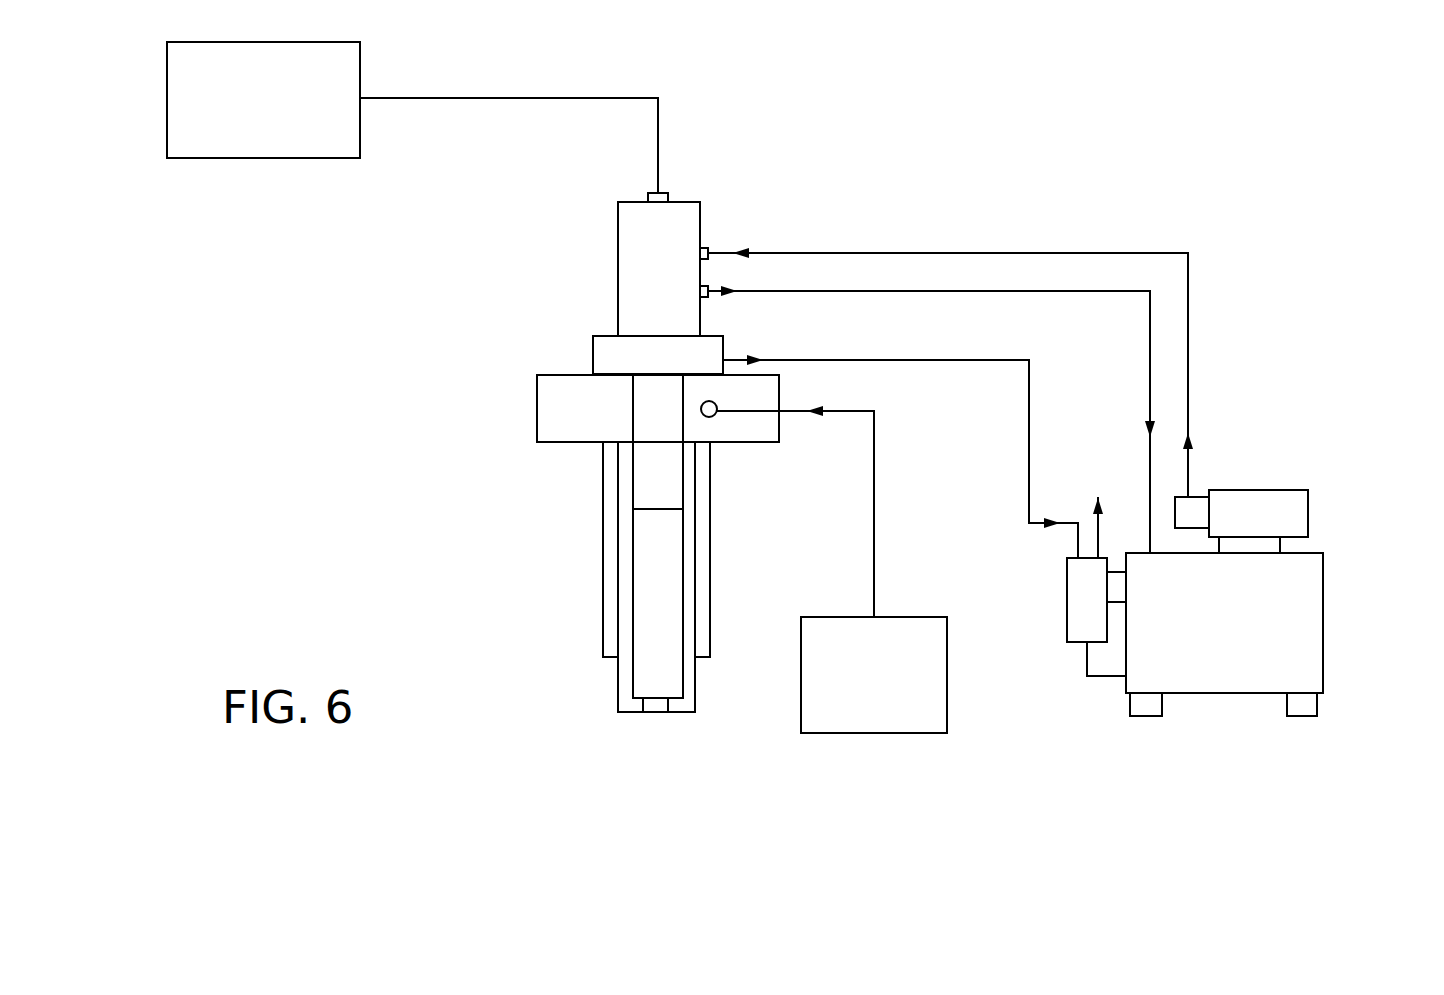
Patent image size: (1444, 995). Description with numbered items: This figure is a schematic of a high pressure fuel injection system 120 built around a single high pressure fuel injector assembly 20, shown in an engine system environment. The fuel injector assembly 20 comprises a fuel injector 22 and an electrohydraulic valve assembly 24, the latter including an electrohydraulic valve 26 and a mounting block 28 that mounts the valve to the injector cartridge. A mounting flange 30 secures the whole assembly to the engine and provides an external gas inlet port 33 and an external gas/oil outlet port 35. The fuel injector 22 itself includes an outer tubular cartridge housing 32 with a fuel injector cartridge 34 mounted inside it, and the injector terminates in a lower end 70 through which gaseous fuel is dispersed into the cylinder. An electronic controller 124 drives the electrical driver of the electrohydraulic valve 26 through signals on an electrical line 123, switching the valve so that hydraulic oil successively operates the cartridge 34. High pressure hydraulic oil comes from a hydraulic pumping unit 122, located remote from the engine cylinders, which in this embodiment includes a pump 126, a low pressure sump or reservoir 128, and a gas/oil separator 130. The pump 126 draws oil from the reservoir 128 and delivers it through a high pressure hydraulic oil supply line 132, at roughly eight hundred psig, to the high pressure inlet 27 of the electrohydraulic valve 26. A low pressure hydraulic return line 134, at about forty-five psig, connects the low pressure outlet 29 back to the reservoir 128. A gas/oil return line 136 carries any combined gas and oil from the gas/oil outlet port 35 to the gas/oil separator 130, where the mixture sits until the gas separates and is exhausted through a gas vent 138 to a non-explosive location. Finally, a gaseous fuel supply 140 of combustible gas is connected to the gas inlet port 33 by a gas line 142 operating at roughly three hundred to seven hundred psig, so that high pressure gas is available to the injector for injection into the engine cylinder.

The high pressure fuel injector assembly 20 is at (703, 160).
The fuel injector 22 is at (525, 508).
The electrohydraulic valve assembly 24 is at (578, 293).
The electrohydraulic valve 26 is at (633, 243).
The high pressure inlet 27 is at (709, 250).
The mounting block 28 is at (604, 353).
The low pressure outlet 29 is at (709, 289).
The mounting flange 30 is at (583, 411).
The cartridge housing 32 is at (617, 643).
The gas inlet port 33 is at (715, 414).
The fuel injector cartridge 34 is at (648, 583).
The gas/oil outlet port 35 is at (723, 355).
The rod end 70 is at (657, 708).
The high pressure fuel injection system 120 is at (1043, 165).
The hydraulic pumping unit 122 is at (1367, 705).
The electrical line 123 is at (510, 97).
The electronic controller 124 is at (240, 163).
The pump 126 is at (1248, 490).
The reservoir 128 is at (1160, 665).
The gas/oil separator 130 is at (1067, 582).
The high pressure hydraulic oil supply line 132 is at (1068, 253).
The low pressure hydraulic return line 134 is at (1098, 292).
The gas/oil return line 136 is at (893, 360).
The gas vent 138 is at (1098, 497).
The gaseous fuel supply 140 is at (848, 733).
The gas line 142 is at (874, 590).